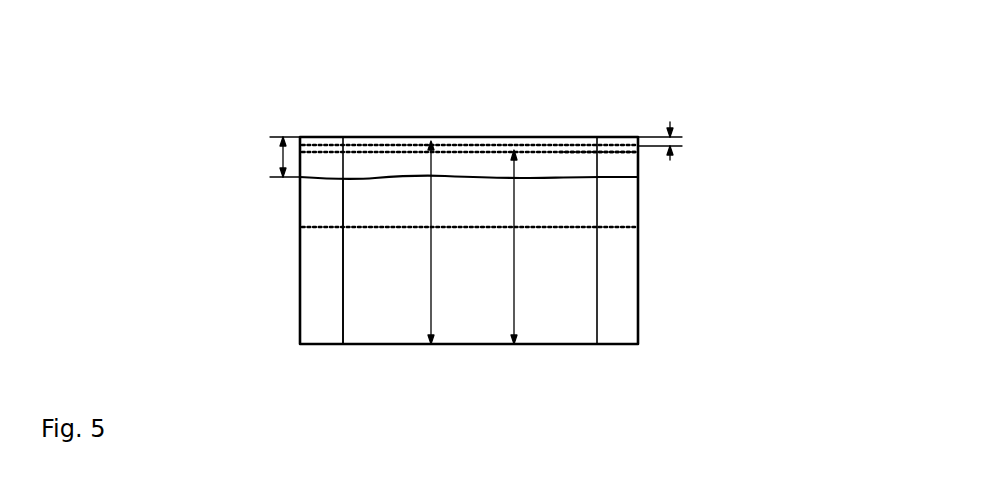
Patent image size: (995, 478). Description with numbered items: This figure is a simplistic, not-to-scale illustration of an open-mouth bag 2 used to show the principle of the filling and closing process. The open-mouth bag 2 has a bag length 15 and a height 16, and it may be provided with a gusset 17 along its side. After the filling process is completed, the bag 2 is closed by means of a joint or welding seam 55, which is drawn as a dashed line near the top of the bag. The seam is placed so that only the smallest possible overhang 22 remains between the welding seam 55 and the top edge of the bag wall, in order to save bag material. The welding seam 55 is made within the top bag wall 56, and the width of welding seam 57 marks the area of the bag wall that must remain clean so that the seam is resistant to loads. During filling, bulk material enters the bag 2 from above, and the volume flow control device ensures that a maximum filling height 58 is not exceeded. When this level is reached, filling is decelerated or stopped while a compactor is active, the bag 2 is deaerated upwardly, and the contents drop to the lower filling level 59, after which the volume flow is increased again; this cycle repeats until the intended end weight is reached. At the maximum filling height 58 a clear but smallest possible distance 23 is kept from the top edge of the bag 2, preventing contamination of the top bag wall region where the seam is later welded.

The open-mouth bag 2 is at (317, 287).
The bag length 15 is at (430, 206).
The height 16 is at (515, 248).
The gusset 17 is at (338, 316).
The overhang 22 is at (703, 143).
The distance 23 is at (267, 157).
The welding seam 55 is at (395, 143).
The top bag wall 56 is at (493, 142).
The width of welding seam 57 is at (641, 148).
The maximum filling height 58 is at (580, 177).
The filling level 59 is at (578, 228).